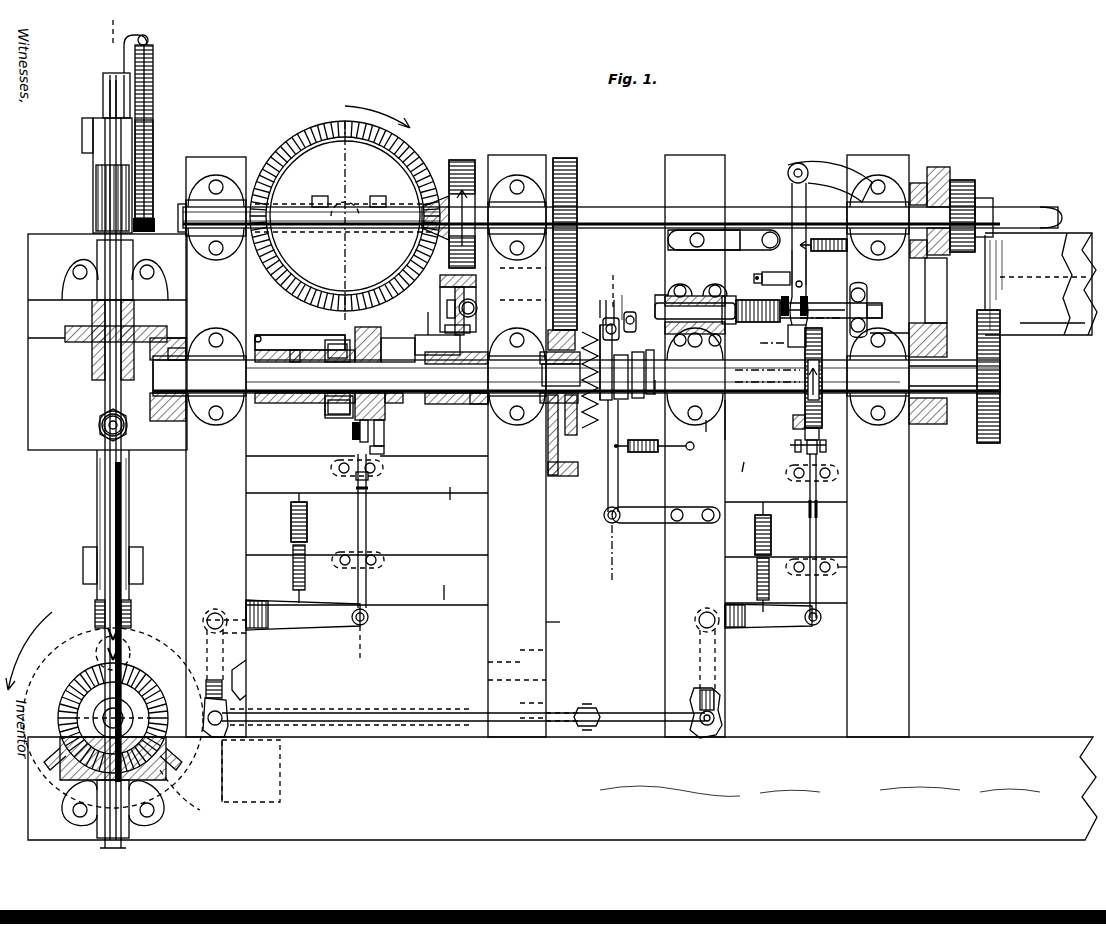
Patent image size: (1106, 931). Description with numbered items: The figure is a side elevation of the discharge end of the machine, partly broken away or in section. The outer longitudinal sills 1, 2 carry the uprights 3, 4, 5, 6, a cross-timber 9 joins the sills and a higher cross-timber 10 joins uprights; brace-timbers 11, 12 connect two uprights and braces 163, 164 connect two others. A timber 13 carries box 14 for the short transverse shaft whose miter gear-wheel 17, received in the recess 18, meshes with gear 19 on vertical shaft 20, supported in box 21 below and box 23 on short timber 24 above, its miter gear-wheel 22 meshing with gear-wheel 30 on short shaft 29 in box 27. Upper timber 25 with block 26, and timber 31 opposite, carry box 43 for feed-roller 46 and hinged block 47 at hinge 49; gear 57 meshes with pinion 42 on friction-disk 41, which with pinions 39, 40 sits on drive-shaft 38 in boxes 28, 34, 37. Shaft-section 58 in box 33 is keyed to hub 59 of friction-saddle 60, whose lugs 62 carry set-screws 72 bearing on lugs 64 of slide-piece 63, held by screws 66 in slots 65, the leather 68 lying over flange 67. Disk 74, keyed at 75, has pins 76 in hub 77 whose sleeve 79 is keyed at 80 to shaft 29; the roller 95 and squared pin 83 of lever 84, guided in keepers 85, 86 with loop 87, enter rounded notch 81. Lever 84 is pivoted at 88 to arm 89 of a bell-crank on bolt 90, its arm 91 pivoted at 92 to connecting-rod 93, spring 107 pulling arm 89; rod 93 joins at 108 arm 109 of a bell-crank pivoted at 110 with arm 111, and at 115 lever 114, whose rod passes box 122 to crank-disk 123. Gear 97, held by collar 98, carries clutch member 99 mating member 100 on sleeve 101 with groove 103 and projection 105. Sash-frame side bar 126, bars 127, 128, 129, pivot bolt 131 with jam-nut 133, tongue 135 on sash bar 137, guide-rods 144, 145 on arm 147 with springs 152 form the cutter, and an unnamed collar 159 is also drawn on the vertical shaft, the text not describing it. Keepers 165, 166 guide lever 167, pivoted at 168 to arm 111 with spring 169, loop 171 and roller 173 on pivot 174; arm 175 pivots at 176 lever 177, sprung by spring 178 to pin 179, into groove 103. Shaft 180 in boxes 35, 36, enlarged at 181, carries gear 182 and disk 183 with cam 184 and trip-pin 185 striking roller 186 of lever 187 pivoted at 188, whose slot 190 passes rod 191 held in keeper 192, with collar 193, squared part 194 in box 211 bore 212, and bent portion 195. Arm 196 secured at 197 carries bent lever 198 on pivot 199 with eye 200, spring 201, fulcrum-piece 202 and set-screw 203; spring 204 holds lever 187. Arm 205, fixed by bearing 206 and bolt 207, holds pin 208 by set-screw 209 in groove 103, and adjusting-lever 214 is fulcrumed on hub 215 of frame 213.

The outer longitudinal sill 1 is at (562, 788).
The outer longitudinal sill 2 is at (94, 54).
The upright 3 is at (350, 126).
The upright 4 is at (620, 300).
The upright 5 is at (800, 165).
The upright 6 is at (992, 160).
The cross-timber 9 is at (282, 768).
The cross-timber 10 is at (528, 672).
The longitudinal brace-timber 11 is at (447, 501).
The longitudinal brace-timber 12 is at (441, 591).
The timber 13 is at (440, 372).
The box 14 is at (808, 326).
The miter gear-wheel 17 is at (135, 692).
The recess in sill 18 is at (72, 782).
The miter gear 19 is at (170, 776).
The vertical shaft 20 is at (93, 388).
The box 21 is at (113, 814).
The miter gear-wheel 22 is at (70, 338).
The box 23 is at (115, 270).
The short timber 24 is at (107, 342).
The longitudinal upper timber 25 is at (566, 284).
The block 26 is at (87, 425).
The box 27 is at (199, 376).
The box 28 is at (212, 218).
The short shaft 29 is at (270, 398).
The miter gear-wheel 30 is at (168, 352).
The upper longitudinal timber 31 is at (1078, 284).
The box 33 is at (517, 376).
The box 34 is at (517, 218).
The box 35 is at (707, 433).
The box 36 is at (878, 376).
The box 37 is at (878, 218).
The main drive-shaft 38 is at (613, 214).
The pinion 39 is at (976, 202).
The pinion 40 is at (566, 160).
The friction-disk 41 is at (462, 162).
The pinion 42 is at (433, 167).
The box 43 is at (345, 200).
The feed-roller 46 is at (382, 436).
The hinged block 47 is at (398, 349).
The hinge 49 is at (300, 341).
The gear 57 is at (364, 142).
The shaft-section 58 is at (410, 414).
The hub of friction-saddle 59 is at (446, 404).
The friction-saddle 60 is at (470, 404).
The lateral lug 62 is at (430, 362).
The slide-piece 63 is at (445, 315).
The lateral lug 64 is at (448, 333).
The vertical slot 65 is at (464, 297).
The screw or bolt 66 is at (471, 310).
The flange 67 is at (473, 288).
The strip of leather 68 is at (470, 278).
The set-screw 72 is at (456, 351).
The disk 74 is at (374, 332).
The key 75 is at (395, 395).
The laterally-projecting pin 76 is at (328, 352).
The hub 77 is at (330, 407).
The sleeve portion 79 is at (340, 317).
The key 80 is at (294, 347).
The rounded notch 81 is at (375, 414).
The squared pin 83 is at (348, 432).
The vertically-reciprocating lever 84 is at (366, 529).
The keeper 85 is at (336, 468).
The keeper 86 is at (385, 563).
The looped portion 87 is at (366, 482).
The pivot 88 is at (366, 623).
The bell-crank arm 89 is at (300, 622).
The bolt 90 is at (216, 612).
The lower bell-crank arm 91 is at (225, 690).
The pivot 92 is at (235, 771).
The connecting-rod 93 is at (381, 716).
The roller 95 is at (380, 451).
The gear 97 is at (567, 459).
The collar 98 is at (560, 369).
The left-hand clutch member 99 is at (578, 418).
The right-hand clutch member 100 is at (609, 352).
The sleeve 101 is at (625, 398).
The annular groove 103 is at (645, 398).
The projection 105 is at (642, 330).
The spiral spring 107 is at (292, 534).
The pivot 108 is at (715, 718).
The lower arm of bell-crank lever 109 is at (710, 706).
The pivot 110 is at (707, 611).
The upper bell-crank arm 111 is at (735, 622).
The lever 114 is at (591, 722).
The pivot 115 is at (587, 708).
The box 122 is at (236, 712).
The crank-disk 123 is at (79, 642).
The side bar of sash-frame 126 is at (98, 505).
The lower horizontal bar 127 is at (84, 579).
The lower horizontal bar 128 is at (147, 575).
The upper horizontal bar 129 is at (90, 139).
The bolt 131 is at (123, 431).
The jam-nut 133 is at (100, 433).
The longitudinal tongue 135 is at (110, 93).
The side bar of sash 137 is at (110, 111).
The guide-rod 144 is at (594, 322).
The guide-rod 145 is at (148, 126).
The arm 147 is at (124, 58).
The spiral spring 152 is at (146, 100).
The collar 159 is at (132, 613).
The brace 163 is at (759, 458).
The brace 164 is at (816, 577).
The keeper 165 is at (840, 472).
The keeper 166 is at (840, 567).
The lever 167 is at (816, 556).
The pivot 168 is at (812, 628).
The spiral spring 169 is at (766, 536).
The looped portion 171 is at (810, 490).
The roller 173 is at (818, 436).
The pivot 174 is at (826, 446).
The arm 175 is at (646, 526).
The pivot 176 is at (605, 519).
The lever 177 is at (610, 496).
The spiral spring 178 is at (650, 452).
The pin 179 is at (690, 451).
The shaft 180 is at (776, 386).
The enlarged part of shaft 181 is at (943, 373).
The gear 182 is at (989, 445).
The disk 183 is at (822, 406).
The cam extension 184 is at (822, 347).
The beveled trip-pin 185 is at (800, 420).
The roller 186 is at (790, 338).
The lever 187 is at (806, 290).
The pivot 188 is at (798, 164).
The eye or elongated slot 190 is at (806, 307).
The horizontal rod 191 is at (876, 309).
The keeper 192 is at (862, 301).
The collar 193 is at (738, 302).
The squared portion 194 is at (768, 311).
The downward bent portion 195 is at (662, 395).
The arm 196 is at (724, 242).
The securing point 197 is at (697, 230).
The short bent lever 198 is at (804, 240).
The pivot 199 is at (770, 231).
The ring or eye 200 is at (810, 322).
The spiral spring 201 is at (759, 317).
The fulcrum-piece 202 is at (795, 272).
The set-screw 203 is at (763, 277).
The spiral spring 204 is at (826, 252).
The arm 205 is at (613, 333).
The bearing 206 is at (650, 318).
The bolt 207 is at (655, 272).
The pin 208 is at (608, 316).
The set-screw 209 is at (623, 318).
The box 211 is at (695, 300).
The enlarged bore 212 is at (700, 308).
The supporting-frame 213 is at (892, 324).
The adjusting-lever 214 is at (920, 184).
The upper hub 215 is at (951, 176).